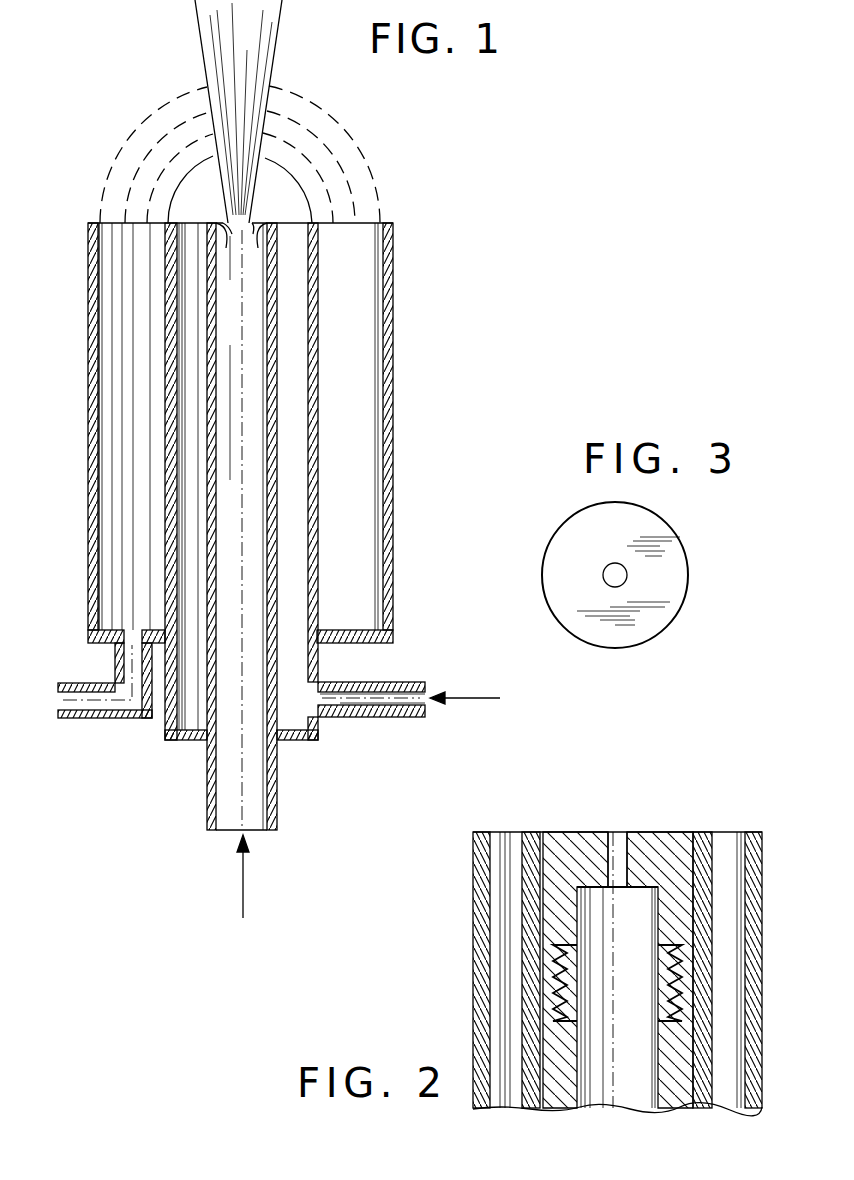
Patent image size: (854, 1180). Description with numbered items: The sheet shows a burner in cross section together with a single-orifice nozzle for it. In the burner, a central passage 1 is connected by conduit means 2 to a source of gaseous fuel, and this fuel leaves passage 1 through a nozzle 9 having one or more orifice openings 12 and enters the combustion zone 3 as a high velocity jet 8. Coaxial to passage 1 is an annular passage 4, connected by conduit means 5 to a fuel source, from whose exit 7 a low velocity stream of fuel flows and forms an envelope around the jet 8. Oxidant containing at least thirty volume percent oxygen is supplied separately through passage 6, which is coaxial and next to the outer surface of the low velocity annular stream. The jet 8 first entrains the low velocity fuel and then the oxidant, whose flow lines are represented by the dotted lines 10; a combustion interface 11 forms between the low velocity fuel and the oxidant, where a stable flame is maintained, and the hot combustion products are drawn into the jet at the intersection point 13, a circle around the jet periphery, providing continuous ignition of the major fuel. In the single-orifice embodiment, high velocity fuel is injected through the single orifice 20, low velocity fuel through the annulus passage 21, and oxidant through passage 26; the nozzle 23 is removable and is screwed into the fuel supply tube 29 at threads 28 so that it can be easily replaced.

In FIG. 1, the passage 1 is at (248, 320).
In FIG. 1, the conduit means 2 is at (243, 900).
In FIG. 1, the combustion zone 3 is at (240, 141).
In FIG. 1, the annular passage 4 is at (298, 362).
In FIG. 1, the conduit means 5 is at (478, 690).
In FIG. 1, the passage 6 is at (112, 340).
In FIG. 1, the exit 7 is at (192, 223).
In FIG. 1, the high velocity jet 8 is at (277, 34).
In FIG. 1, the nozzle 9 is at (213, 222).
In FIG. 1, the dotted lines 10 is at (138, 123).
In FIG. 1, the combustion interface 11 is at (183, 173).
In FIG. 1, the orifice opening 12 is at (246, 223).
In FIG. 1, the intersection point 13 is at (213, 150).
In FIG. 3, the single orifice 20 is at (612, 564).
In FIG. 2, the single orifice 20 is at (615, 847).
In FIG. 2, the annulus passage 21 is at (693, 837).
In FIG. 2, the nozzle 23 is at (558, 847).
In FIG. 2, the passage 26 is at (730, 900).
In FIG. 2, the threads 28 is at (672, 1000).
In FIG. 2, the fuel supply tube 29 is at (672, 1096).